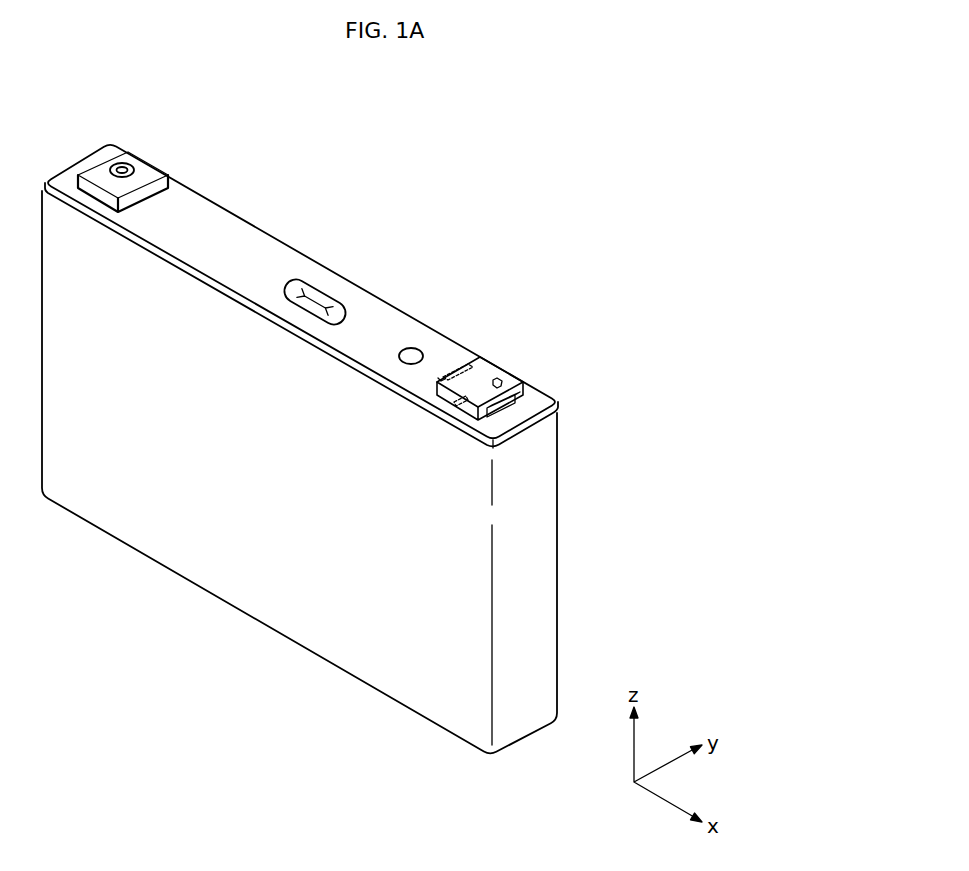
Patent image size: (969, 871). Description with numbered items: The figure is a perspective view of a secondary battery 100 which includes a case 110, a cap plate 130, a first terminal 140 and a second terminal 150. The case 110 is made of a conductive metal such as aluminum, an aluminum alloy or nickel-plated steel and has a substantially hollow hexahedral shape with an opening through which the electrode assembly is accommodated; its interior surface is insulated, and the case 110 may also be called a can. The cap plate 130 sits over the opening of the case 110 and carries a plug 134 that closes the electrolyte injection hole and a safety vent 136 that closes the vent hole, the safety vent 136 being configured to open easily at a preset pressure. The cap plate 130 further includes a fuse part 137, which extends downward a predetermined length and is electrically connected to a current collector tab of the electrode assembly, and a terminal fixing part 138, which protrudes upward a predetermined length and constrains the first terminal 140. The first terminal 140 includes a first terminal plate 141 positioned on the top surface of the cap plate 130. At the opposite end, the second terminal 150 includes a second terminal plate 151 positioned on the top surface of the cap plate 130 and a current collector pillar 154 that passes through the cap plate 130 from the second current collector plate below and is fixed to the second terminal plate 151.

The secondary battery 100 is at (593, 185).
The case 110 is at (255, 603).
The cap plate 130 is at (245, 237).
The plug 134 is at (412, 349).
The safety vent 136 is at (318, 295).
The fuse part 137 is at (501, 377).
The terminal fixing part 138 is at (523, 392).
The first terminal 140 is at (505, 355).
The first terminal plate 141 is at (480, 363).
The second terminal 150 is at (170, 160).
The second terminal plate 151 is at (135, 162).
The current collector pillar 154 is at (121, 165).